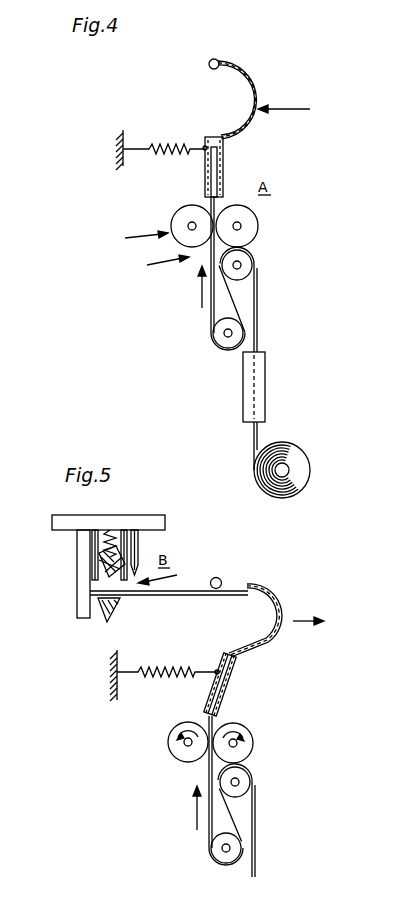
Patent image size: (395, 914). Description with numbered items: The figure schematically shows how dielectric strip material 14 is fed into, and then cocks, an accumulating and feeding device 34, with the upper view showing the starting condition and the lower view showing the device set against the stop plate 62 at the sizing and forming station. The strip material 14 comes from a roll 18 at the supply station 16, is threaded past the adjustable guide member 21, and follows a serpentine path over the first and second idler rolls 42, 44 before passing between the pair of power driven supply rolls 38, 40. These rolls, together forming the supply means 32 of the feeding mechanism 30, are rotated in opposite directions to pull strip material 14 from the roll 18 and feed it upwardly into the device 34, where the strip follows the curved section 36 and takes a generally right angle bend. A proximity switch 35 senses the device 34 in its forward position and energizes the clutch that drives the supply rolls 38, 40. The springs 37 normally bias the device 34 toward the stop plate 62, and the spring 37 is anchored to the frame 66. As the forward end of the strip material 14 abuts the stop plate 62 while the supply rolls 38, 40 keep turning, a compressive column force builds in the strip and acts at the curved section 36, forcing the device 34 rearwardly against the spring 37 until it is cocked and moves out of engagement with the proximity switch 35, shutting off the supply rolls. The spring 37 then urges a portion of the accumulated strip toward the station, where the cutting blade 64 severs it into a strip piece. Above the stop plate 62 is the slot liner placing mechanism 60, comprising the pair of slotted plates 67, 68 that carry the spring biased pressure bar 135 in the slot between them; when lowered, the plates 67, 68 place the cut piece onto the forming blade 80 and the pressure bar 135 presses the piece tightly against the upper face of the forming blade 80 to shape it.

In FIG. 4, the dielectric strip material 14 is at (257, 305).
In FIG. 5, the dielectric strip material 14 is at (217, 596).
In FIG. 4, the supply station 16 is at (305, 462).
In FIG. 4, the roll 18 is at (312, 470).
In FIG. 4, the guide member 21 is at (262, 380).
In FIG. 4, the feeding mechanism 30 is at (142, 273).
In FIG. 4, the supply means 32 is at (134, 240).
In FIG. 4, the accumulating and feeding device 34 is at (295, 112).
In FIG. 4, the proximity switch 35 is at (210, 68).
In FIG. 5, the proximity switch 35 is at (222, 578).
In FIG. 4, the curved section 36 is at (257, 92).
In FIG. 5, the curved section 36 is at (280, 635).
In FIG. 4, the spring 37 is at (170, 155).
In FIG. 5, the spring 37 is at (165, 667).
In FIG. 4, the supply roll 38 is at (252, 224).
In FIG. 5, the supply roll 38 is at (248, 745).
In FIG. 4, the supply roll 40 is at (180, 215).
In FIG. 5, the supply roll 40 is at (182, 753).
In FIG. 4, the idler roll 42 is at (248, 262).
In FIG. 5, the idler roll 42 is at (249, 779).
In FIG. 4, the idler roll 44 is at (222, 337).
In FIG. 5, the idler roll 44 is at (222, 857).
In FIG. 5, the slot liner placing mechanism 60 is at (126, 550).
In FIG. 5, the stop plate 62 is at (77, 587).
In FIG. 5, the cutting blade 64 is at (139, 551).
In FIG. 4, the frame 66 is at (125, 136).
In FIG. 5, the frame 66 is at (122, 687).
In FIG. 5, the slotted plate 67 is at (92, 542).
In FIG. 5, the slotted plate 68 is at (117, 547).
In FIG. 5, the forming blade 80 is at (118, 612).
In FIG. 5, the pressure bar 135 is at (100, 560).